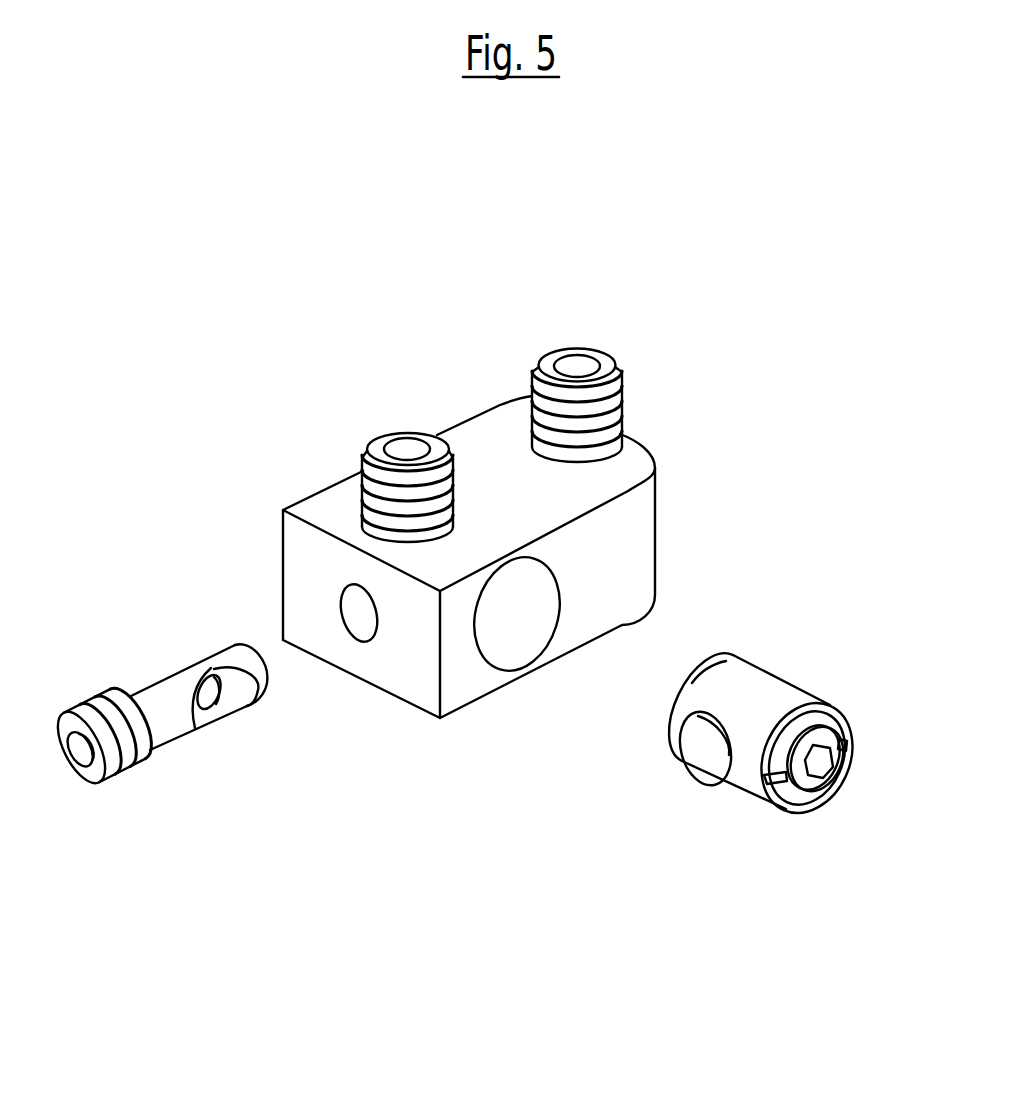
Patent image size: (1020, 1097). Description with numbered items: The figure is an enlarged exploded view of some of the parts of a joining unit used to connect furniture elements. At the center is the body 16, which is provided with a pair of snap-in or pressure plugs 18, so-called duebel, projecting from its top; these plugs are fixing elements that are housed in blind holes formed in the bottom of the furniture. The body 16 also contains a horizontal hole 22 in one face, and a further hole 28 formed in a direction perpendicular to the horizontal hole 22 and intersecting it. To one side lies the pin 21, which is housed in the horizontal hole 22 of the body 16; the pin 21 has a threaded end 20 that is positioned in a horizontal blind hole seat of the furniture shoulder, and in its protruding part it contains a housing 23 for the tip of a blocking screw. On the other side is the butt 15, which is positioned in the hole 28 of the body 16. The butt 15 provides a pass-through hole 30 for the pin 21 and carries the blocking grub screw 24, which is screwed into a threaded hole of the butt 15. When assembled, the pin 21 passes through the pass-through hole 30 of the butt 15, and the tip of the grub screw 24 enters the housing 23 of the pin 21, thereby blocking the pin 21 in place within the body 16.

The butt 15 is at (749, 742).
The body 16 is at (514, 648).
The snap-in or pressure plugs 18 is at (383, 432).
The threaded end 20 is at (233, 727).
The pin 21 is at (275, 818).
The horizontal hole 22 is at (353, 589).
The housing 23 is at (230, 700).
The blocking grub screw 24 is at (829, 739).
The hole 28 is at (517, 664).
The pass-through hole 30 is at (718, 770).